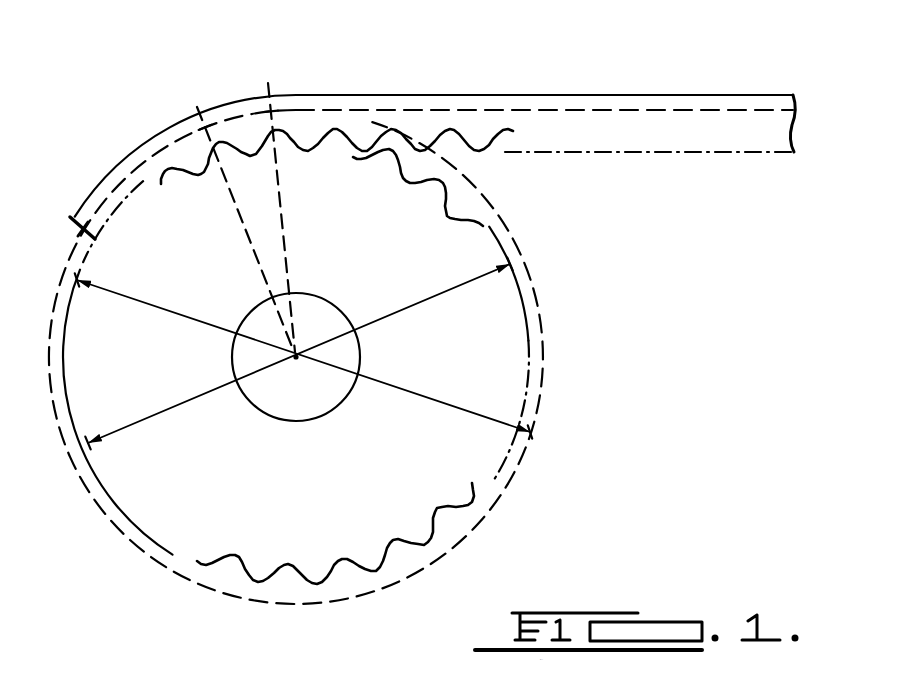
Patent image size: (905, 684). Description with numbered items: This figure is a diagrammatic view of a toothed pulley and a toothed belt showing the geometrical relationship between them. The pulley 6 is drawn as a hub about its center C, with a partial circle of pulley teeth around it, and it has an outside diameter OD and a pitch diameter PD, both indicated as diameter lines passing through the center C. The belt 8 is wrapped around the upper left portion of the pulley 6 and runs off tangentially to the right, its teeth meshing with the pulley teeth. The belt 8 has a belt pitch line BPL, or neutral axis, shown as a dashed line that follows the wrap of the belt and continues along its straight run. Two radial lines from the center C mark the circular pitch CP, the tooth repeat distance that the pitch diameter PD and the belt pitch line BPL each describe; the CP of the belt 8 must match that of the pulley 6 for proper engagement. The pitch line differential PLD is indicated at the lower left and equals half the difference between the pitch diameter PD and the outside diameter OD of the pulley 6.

The pulley 6 is at (525, 341).
The belt 8 is at (543, 97).
The belt pitch line BPL is at (718, 112).
The circular pitch CP is at (257, 108).
The pitch diameter PD is at (303, 355).
The outside diameter OD is at (298, 354).
The pitch line differential PLD is at (180, 483).
The center C is at (296, 358).